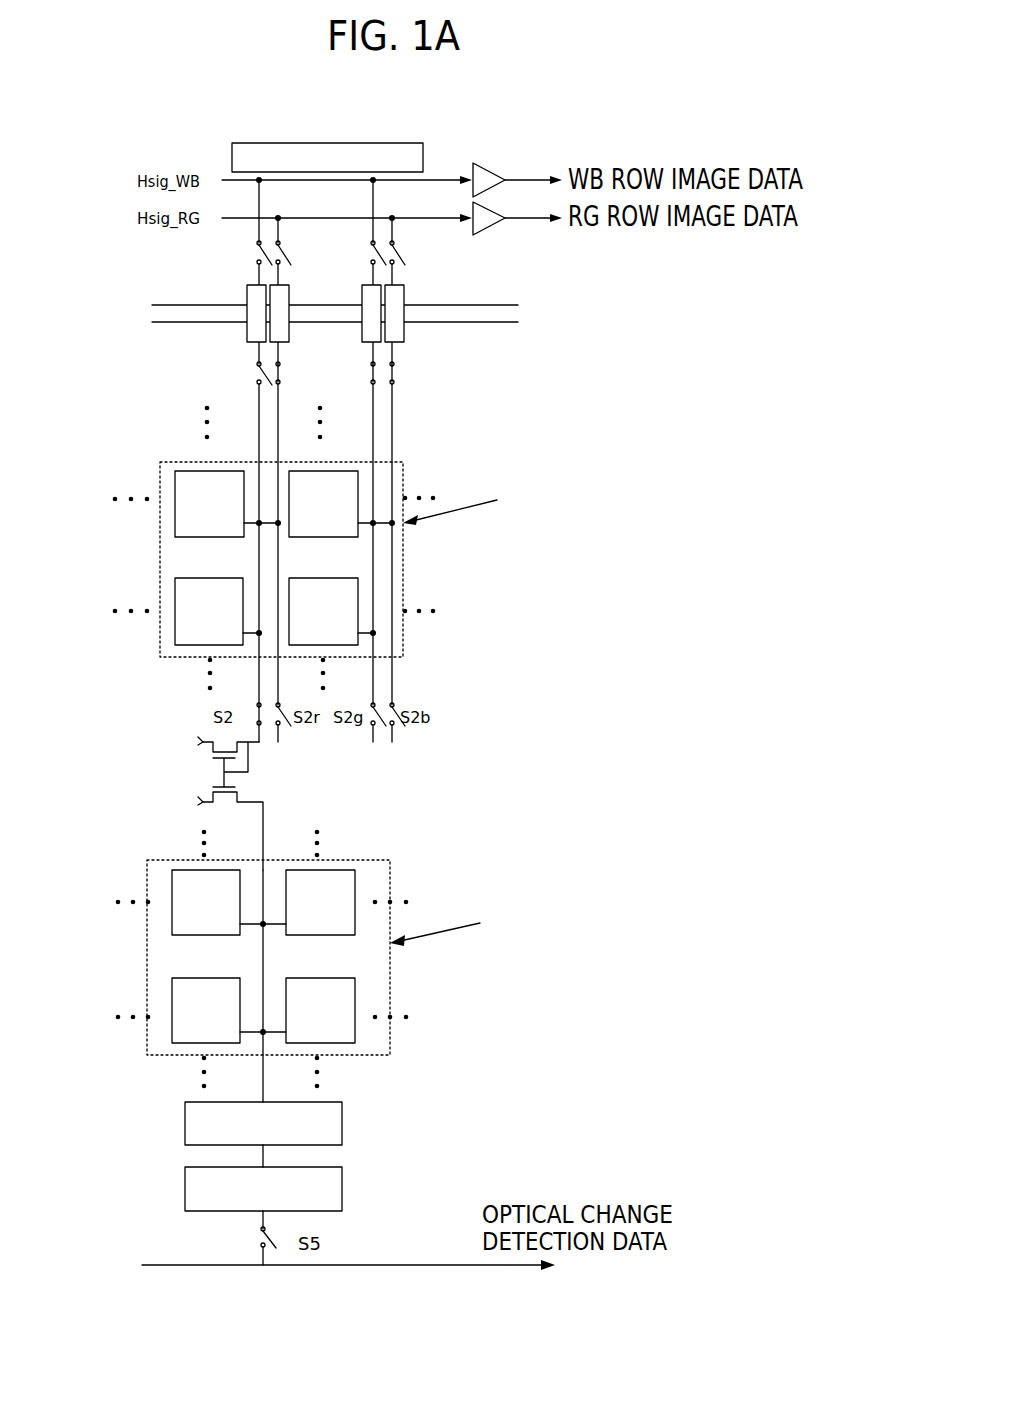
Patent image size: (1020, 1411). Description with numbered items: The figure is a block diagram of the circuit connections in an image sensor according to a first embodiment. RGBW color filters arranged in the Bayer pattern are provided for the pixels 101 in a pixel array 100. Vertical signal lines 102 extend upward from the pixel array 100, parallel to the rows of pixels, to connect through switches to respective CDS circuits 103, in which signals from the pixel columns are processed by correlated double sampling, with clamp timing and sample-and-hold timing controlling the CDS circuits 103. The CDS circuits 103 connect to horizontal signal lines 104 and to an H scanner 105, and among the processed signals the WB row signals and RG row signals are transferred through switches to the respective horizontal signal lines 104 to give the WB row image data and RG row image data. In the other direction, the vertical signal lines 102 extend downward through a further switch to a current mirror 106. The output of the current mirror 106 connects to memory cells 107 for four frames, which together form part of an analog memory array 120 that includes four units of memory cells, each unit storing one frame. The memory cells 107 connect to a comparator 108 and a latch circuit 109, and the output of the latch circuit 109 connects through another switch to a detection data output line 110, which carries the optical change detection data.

The pixel array 100 is at (457, 459).
The pixels 101 is at (180, 512).
The vertical signal lines 102 is at (258, 427).
The CDS circuits 103 is at (289, 290).
The horizontal signal lines 104 is at (440, 178).
The H scanner 105 is at (404, 141).
The current mirror 106 is at (220, 772).
The memory cells 107 is at (335, 877).
The comparator 108 is at (335, 1122).
The latch circuit 109 is at (335, 1188).
The detection data output line 110 is at (403, 1265).
The analog memory array 120 is at (427, 876).